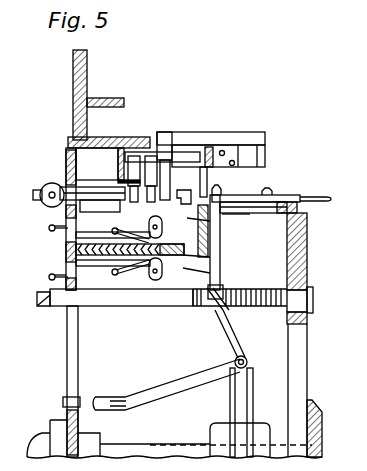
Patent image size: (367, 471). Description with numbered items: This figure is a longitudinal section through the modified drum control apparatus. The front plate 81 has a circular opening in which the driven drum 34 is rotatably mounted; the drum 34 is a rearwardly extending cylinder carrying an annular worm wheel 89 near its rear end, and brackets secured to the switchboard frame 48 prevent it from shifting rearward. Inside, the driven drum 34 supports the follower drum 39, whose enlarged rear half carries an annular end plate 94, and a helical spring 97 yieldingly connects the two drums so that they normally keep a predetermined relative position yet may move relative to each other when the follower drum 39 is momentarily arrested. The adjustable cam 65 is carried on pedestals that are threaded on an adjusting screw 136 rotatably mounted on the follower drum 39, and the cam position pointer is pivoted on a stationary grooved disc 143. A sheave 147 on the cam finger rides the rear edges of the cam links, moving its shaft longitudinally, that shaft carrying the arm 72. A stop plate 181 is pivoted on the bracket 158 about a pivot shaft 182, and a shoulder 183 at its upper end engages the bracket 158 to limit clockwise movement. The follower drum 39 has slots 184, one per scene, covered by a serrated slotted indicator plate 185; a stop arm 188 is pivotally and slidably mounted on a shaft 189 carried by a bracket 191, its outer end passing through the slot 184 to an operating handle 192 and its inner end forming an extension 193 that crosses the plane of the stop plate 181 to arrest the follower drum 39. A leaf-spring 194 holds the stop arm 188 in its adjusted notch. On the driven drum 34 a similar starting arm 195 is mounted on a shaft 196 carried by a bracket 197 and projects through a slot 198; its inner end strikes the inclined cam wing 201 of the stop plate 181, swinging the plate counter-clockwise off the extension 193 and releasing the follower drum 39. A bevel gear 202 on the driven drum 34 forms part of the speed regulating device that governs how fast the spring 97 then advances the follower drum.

The front plate 81 is at (57, 95).
The switchboard frame 48 is at (89, 100).
The driven drum 34 is at (104, 138).
The annular worm wheel 89 is at (141, 140).
The bracket 158 is at (198, 152).
The pivot shaft 182 is at (177, 199).
The shoulder 183 is at (204, 190).
The adjustable cam 65 is at (244, 191).
The helical spring 97 is at (190, 237).
The arm 72 is at (314, 197).
The sheave 147 is at (285, 182).
The annular end plate 94 is at (288, 259).
The bevel gear 202 is at (322, 424).
The cam wing 201 is at (210, 224).
The bracket 197 is at (245, 214).
The stop plate 181 is at (210, 259).
The bracket 191 is at (210, 275).
The slotted indicator plate 185 is at (67, 258).
The slots 184 is at (72, 263).
The slot 198 is at (57, 222).
The operating handle 192 is at (49, 277).
The shaft 196 is at (164, 228).
The leaf-spring 194 is at (120, 229).
The starting arm 195 is at (104, 216).
The adjusting screw 136 is at (44, 300).
The extension 193 is at (170, 270).
The stop arm 188 is at (106, 270).
The shaft 189 is at (145, 270).
The follower drum 39 is at (70, 313).
The stationary grooved disc 143 is at (232, 392).